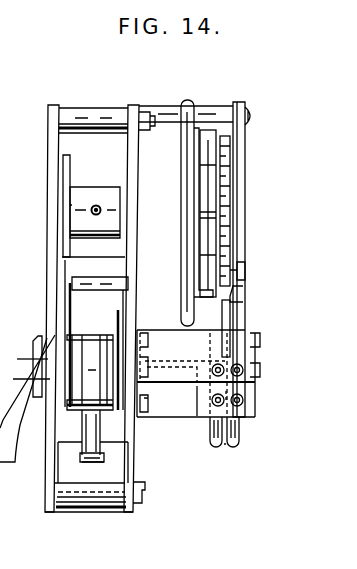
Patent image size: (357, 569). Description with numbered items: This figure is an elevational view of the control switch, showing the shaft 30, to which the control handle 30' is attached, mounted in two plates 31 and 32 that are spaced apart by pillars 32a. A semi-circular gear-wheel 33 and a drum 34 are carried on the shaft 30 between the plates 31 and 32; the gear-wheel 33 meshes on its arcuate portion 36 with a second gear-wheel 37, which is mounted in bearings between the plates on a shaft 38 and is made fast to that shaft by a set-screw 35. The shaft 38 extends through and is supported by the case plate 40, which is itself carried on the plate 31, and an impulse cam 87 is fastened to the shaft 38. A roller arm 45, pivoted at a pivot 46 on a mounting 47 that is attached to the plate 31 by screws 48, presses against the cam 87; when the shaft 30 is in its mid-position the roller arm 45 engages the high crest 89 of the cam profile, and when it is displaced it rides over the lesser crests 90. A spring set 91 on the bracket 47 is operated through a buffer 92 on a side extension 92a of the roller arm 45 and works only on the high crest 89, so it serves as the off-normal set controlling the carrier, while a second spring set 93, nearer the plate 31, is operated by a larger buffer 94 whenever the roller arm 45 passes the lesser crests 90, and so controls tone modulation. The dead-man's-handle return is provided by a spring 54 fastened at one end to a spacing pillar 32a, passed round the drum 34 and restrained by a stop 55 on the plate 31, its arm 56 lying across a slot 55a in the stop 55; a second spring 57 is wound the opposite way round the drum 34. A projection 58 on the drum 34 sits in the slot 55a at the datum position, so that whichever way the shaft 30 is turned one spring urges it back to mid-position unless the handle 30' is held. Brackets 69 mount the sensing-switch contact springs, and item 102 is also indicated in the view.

The shaft 30 is at (198, 388).
The handle 30' is at (64, 463).
The plate 31 is at (137, 491).
The plate 32 is at (52, 414).
The pillar 32a is at (94, 107).
The semi-circular gear-wheel 33 is at (24, 361).
The drum 34 is at (88, 333).
The set-screw 35 is at (99, 206).
The arcuate portion 36 is at (68, 278).
The second gear-wheel 37 is at (70, 172).
The shaft 38 is at (150, 205).
The case plate 40 is at (202, 217).
The roller arm 45 is at (231, 312).
The pivot 46 is at (38, 337).
The mounting 47 is at (197, 400).
The screws 48 is at (145, 412).
The spring 54 is at (25, 383).
The stop 55 is at (40, 483).
The slot 55a is at (91, 463).
The arm 56 is at (104, 461).
The second spring 57 is at (131, 303).
The projection 58 is at (90, 422).
The brackets 69 is at (153, 348).
The impulse cam 87 is at (226, 186).
The high crest 89 is at (0, 211).
The lesser crests 90 is at (3, 152).
The spring set 91 is at (246, 294).
The buffer 92 is at (0, 258).
The side extension 92a is at (246, 281).
The second spring set 93 is at (0, 235).
The larger buffer 94 is at (0, 279).
The element 102 is at (15, 304).